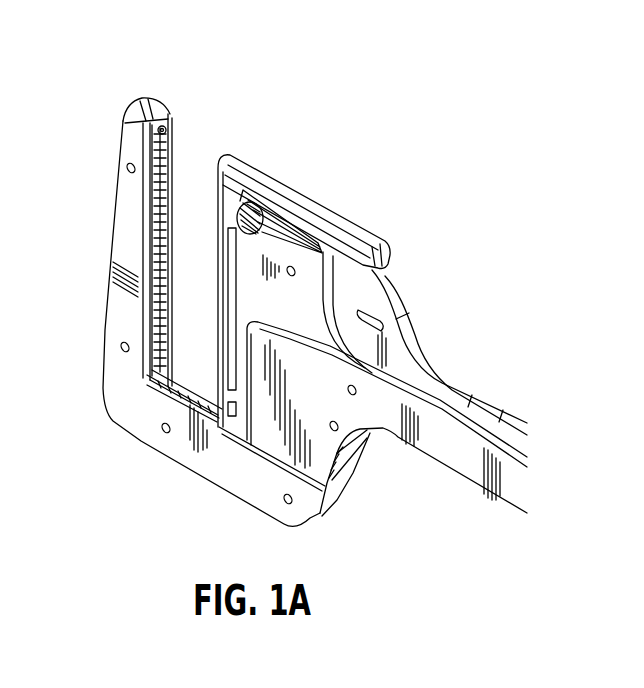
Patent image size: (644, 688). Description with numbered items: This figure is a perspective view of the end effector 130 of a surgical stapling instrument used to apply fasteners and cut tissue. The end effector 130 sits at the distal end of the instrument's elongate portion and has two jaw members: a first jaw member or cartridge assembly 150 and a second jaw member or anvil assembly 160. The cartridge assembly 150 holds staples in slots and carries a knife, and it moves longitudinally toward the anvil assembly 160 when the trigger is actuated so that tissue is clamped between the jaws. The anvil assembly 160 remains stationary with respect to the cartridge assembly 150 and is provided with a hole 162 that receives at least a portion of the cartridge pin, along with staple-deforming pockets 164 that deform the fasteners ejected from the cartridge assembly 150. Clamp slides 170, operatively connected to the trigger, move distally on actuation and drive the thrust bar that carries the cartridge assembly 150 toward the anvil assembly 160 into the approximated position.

The end effector 130 is at (289, 101).
The cartridge assembly 150 is at (314, 183).
The anvil assembly 160 is at (168, 92).
The hole 162 is at (167, 131).
The staple-deforming pockets 164 is at (153, 318).
The clamp slides 170 is at (355, 310).